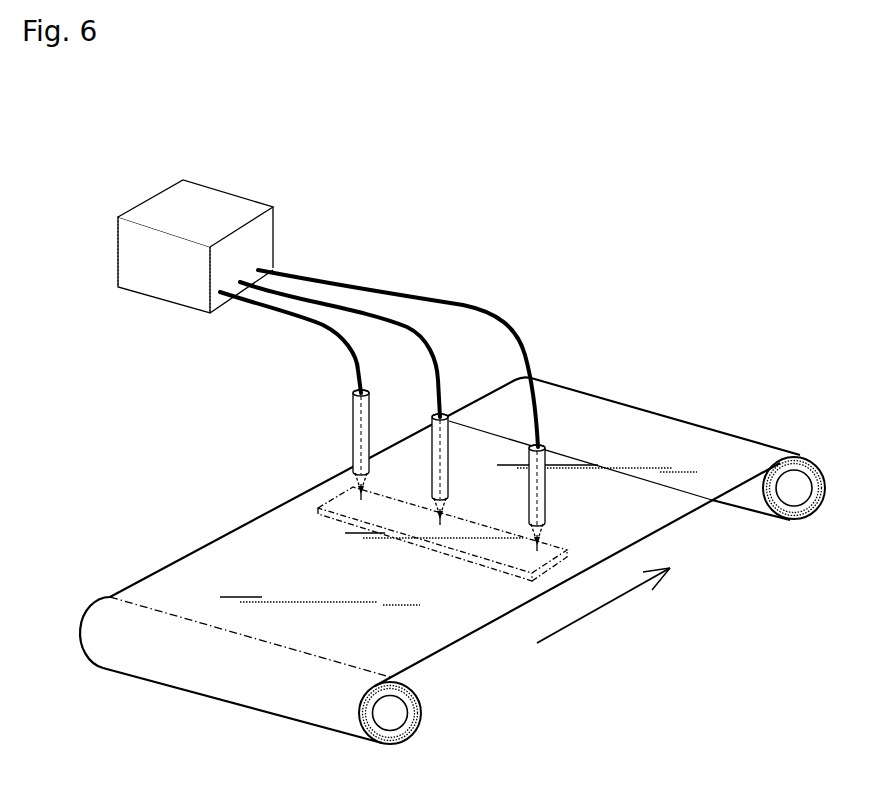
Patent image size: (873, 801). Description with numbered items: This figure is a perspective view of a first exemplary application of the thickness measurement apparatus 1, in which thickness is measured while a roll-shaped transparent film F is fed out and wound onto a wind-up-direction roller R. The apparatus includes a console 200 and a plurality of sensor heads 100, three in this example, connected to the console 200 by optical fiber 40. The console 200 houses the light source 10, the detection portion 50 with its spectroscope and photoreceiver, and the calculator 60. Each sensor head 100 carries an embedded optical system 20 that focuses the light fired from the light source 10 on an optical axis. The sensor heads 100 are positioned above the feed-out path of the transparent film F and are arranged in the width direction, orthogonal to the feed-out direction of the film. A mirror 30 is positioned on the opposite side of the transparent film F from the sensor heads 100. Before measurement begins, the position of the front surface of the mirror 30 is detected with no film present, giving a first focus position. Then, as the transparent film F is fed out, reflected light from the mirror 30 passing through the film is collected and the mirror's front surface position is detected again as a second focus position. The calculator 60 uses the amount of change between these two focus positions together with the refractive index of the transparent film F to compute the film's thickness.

The thickness measurement apparatus 1 is at (508, 237).
The light source 10 is at (210, 198).
The optical system 20 is at (348, 452).
The mirror 30 is at (340, 503).
The optical fiber 40 is at (352, 357).
The detection portion 50 is at (243, 210).
The calculator 60 is at (260, 238).
The sensor head 100 is at (350, 413).
The console 200 is at (150, 210).
The transparent film F is at (653, 513).
The wind-up-direction roller R is at (795, 487).